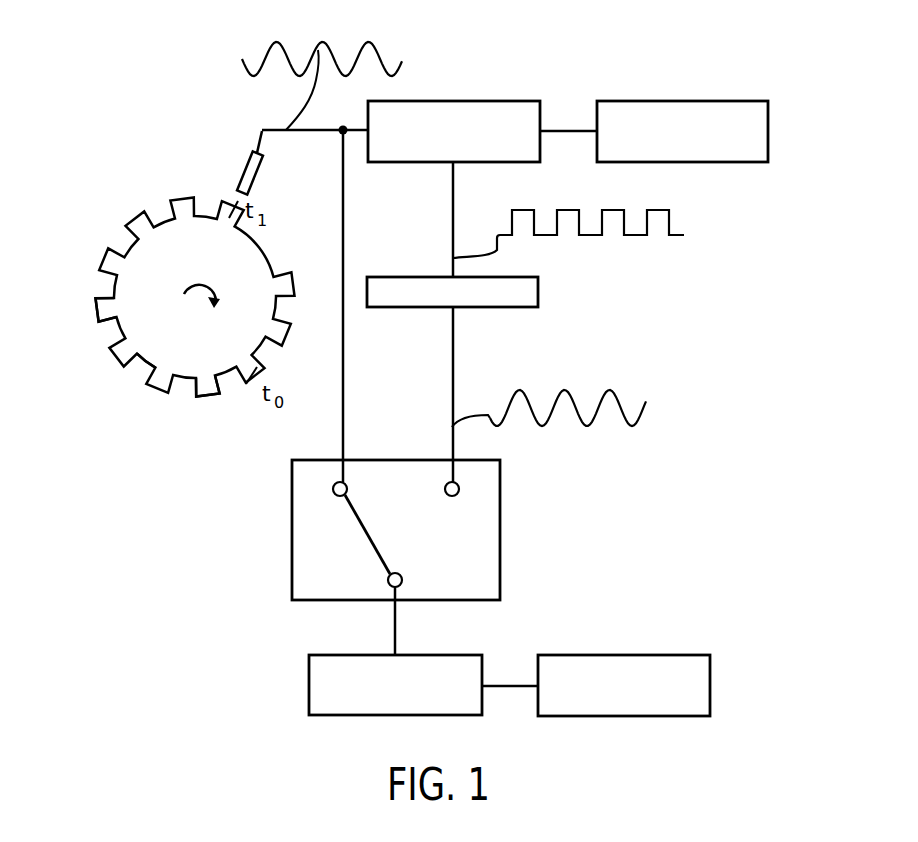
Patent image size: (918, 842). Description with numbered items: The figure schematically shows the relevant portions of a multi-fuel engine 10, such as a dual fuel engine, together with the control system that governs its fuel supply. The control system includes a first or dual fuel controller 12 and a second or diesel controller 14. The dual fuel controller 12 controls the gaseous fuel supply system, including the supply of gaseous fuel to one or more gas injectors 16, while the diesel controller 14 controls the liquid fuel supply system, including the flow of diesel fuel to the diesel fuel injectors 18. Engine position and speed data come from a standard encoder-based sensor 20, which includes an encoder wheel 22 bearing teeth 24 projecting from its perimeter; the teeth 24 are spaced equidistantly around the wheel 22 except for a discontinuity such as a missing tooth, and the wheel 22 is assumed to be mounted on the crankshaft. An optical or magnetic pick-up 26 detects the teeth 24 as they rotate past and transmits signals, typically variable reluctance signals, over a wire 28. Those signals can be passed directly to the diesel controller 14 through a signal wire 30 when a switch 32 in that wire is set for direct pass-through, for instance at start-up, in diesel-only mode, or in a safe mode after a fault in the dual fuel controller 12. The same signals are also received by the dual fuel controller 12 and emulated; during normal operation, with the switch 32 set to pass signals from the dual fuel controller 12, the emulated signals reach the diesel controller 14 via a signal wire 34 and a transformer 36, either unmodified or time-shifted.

The engine 10 is at (553, 31).
The dual fuel controller 12 is at (453, 101).
The diesel controller 14 is at (308, 687).
The gas injectors 16 is at (683, 101).
The diesel fuel injectors 18 is at (711, 688).
The sensor 20 is at (176, 184).
The encoder wheel 22 is at (136, 370).
The teeth 24 is at (95, 312).
The pick-up 26 is at (245, 174).
The wire 28 is at (308, 132).
The signal wire 30 is at (343, 308).
The switch 32 is at (291, 530).
The signal wire 34 is at (451, 393).
The transformer 36 is at (538, 293).